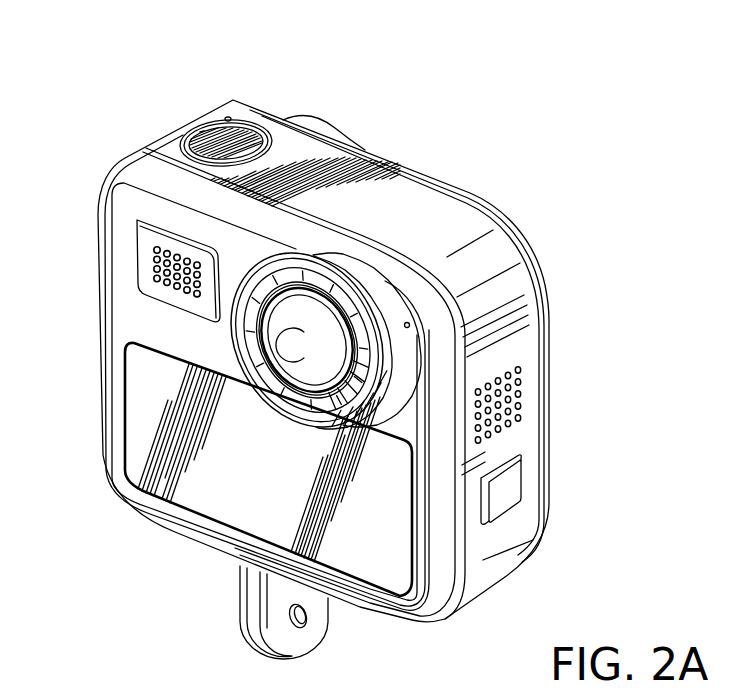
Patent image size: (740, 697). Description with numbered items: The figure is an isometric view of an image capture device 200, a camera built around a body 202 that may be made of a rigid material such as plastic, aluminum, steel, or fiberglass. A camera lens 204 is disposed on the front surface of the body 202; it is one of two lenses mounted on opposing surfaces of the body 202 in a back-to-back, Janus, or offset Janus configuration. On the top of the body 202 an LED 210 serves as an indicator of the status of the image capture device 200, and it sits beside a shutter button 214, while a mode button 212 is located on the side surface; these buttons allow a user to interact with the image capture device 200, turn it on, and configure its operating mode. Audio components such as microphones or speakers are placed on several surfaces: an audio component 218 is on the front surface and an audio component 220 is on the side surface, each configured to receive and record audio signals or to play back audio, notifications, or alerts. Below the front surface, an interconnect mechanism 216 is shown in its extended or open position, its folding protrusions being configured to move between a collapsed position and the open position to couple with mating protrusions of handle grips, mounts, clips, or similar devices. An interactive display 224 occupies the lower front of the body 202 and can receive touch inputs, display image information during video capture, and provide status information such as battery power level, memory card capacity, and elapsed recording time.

The image capture device 200 is at (598, 171).
The body 202 is at (100, 335).
The camera lens 204 is at (286, 370).
The LED 210 is at (228, 117).
The mode button 212 is at (510, 477).
The shutter button 214 is at (238, 143).
The interconnect mechanism 216 is at (277, 597).
The audio component 218 is at (150, 274).
The audio component 220 is at (520, 390).
The interactive display 224 is at (395, 566).